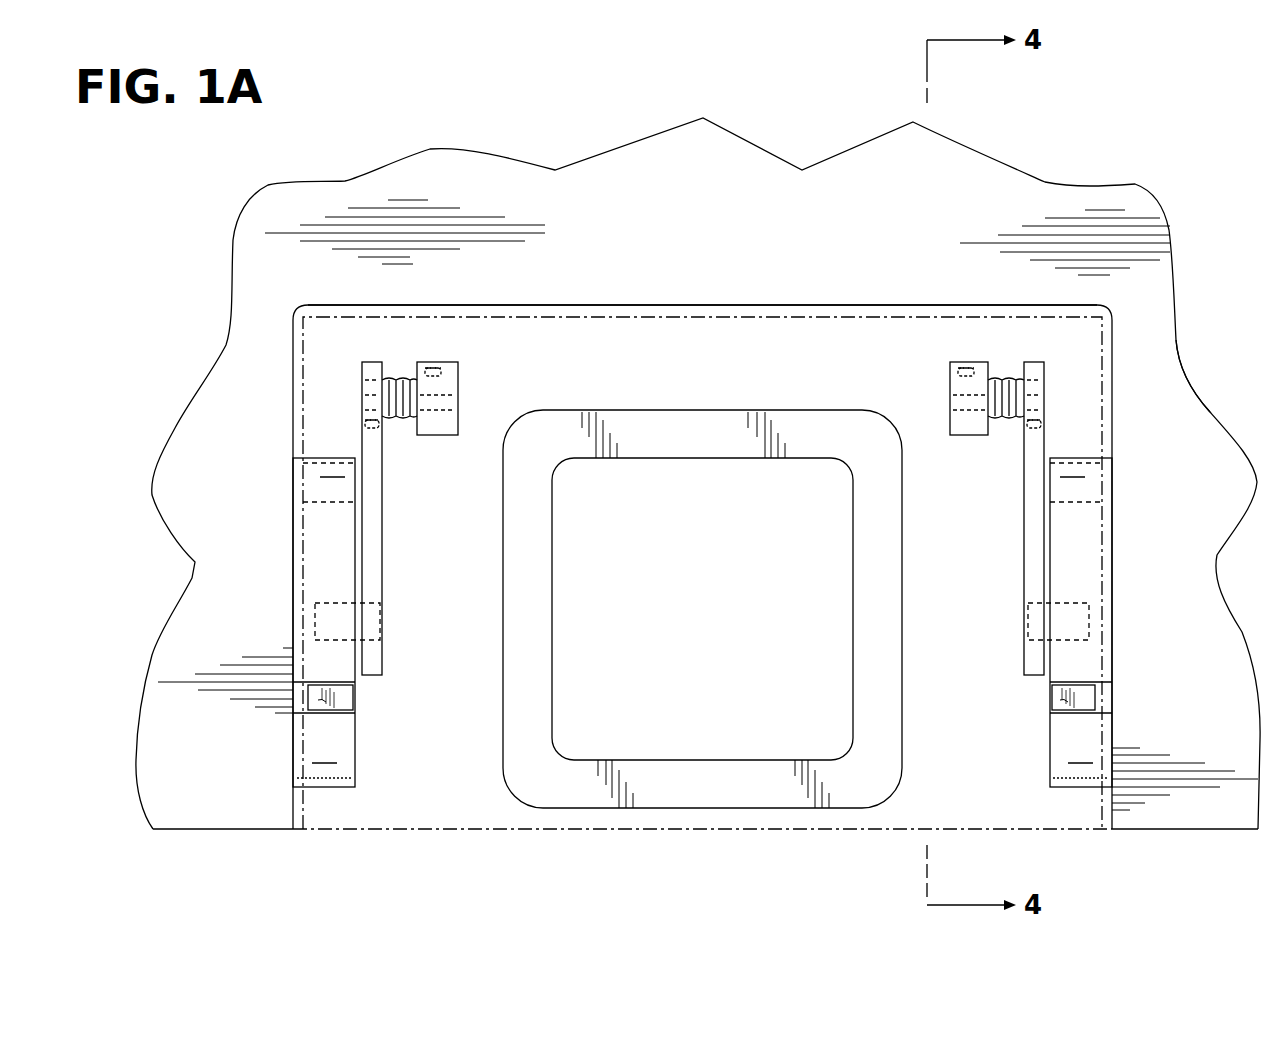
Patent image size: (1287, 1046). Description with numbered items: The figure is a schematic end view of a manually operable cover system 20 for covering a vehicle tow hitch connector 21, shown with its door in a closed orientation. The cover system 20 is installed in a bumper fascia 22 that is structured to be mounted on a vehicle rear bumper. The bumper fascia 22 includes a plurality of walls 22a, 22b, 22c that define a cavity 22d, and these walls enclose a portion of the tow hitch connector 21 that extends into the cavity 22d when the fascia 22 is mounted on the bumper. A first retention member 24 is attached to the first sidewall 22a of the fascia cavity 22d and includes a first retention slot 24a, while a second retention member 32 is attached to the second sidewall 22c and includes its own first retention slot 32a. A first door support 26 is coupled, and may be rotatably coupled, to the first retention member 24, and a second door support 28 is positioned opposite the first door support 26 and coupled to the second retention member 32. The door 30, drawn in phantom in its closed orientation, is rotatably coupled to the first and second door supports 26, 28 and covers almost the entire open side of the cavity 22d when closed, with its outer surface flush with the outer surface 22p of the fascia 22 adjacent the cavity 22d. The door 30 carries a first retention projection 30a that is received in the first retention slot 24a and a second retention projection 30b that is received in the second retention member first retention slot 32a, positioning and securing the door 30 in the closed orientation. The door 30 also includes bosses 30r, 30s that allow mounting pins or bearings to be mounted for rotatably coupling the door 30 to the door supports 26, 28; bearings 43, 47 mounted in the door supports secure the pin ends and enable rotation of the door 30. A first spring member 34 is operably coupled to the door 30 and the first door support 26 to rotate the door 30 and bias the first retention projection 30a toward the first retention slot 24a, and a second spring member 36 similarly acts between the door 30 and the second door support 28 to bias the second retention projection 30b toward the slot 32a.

The cover system 20 is at (518, 94).
The vehicle tow hitch connector 21 is at (700, 785).
The bumper fascia 22 is at (606, 183).
The first sidewall 22a is at (300, 430).
The wall 22b is at (655, 302).
The second sidewall 22c is at (1113, 396).
The cavity 22d is at (547, 358).
The outer surface of the fascia 22p is at (746, 241).
The first retention member 24 is at (328, 560).
The first retention slot 24a is at (322, 680).
The first door support 26 is at (365, 440).
The second door support 28 is at (1036, 448).
The door 30 is at (462, 838).
The first retention projection 30a is at (340, 702).
The second retention projection 30b is at (1060, 702).
The boss 30r is at (440, 437).
The boss 30s is at (968, 437).
The second retention member 32 is at (1088, 562).
The first retention slot 32a is at (1075, 680).
The first spring member 34 is at (398, 378).
The second spring member 36 is at (1012, 378).
The bearing 43 is at (360, 360).
The bearing 47 is at (956, 398).